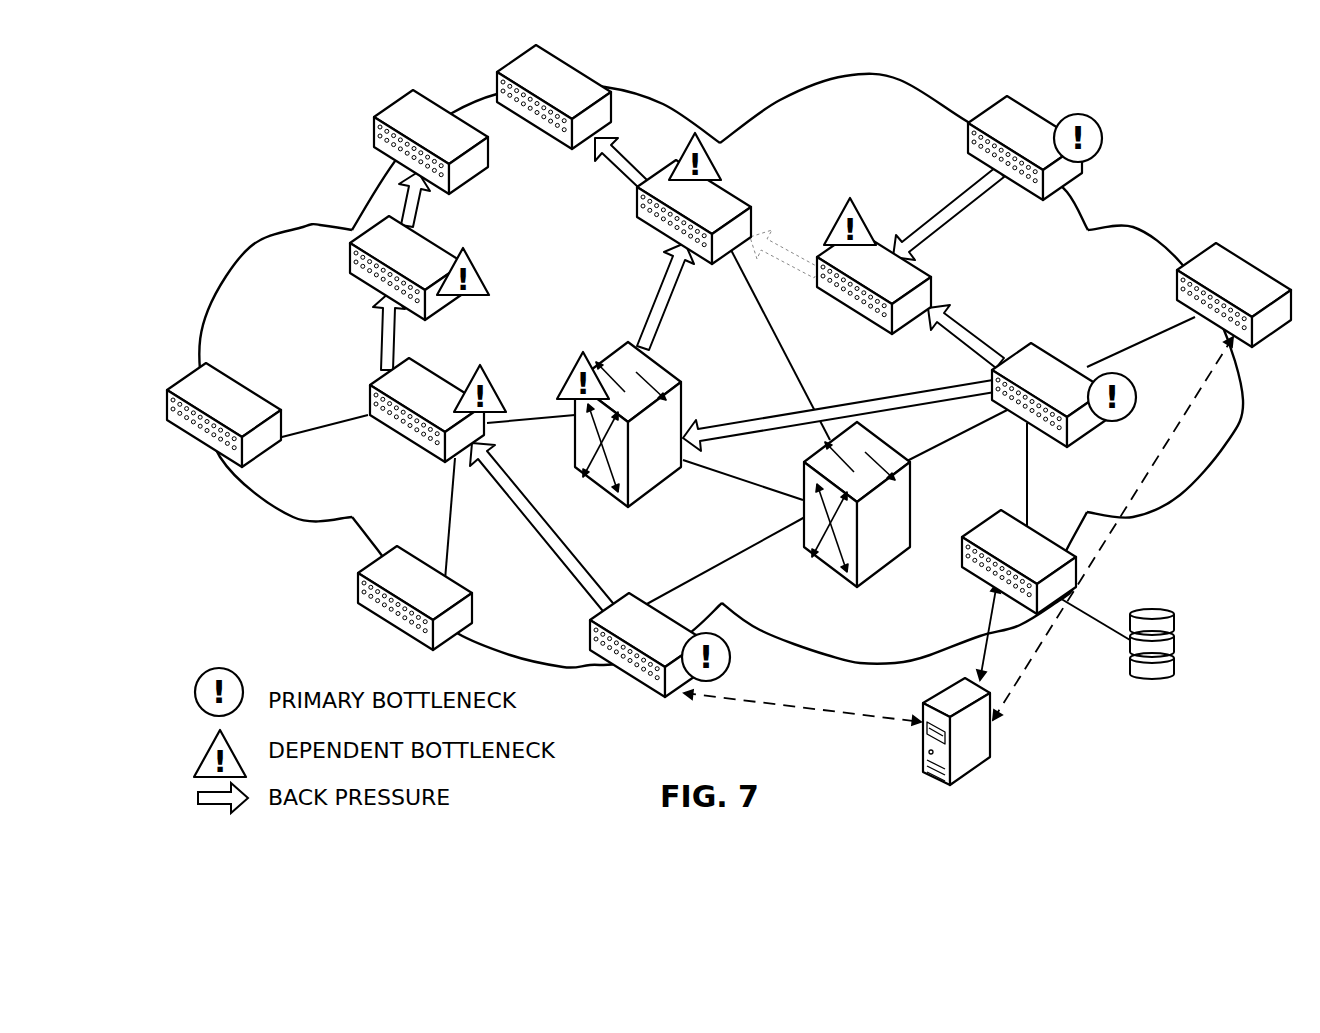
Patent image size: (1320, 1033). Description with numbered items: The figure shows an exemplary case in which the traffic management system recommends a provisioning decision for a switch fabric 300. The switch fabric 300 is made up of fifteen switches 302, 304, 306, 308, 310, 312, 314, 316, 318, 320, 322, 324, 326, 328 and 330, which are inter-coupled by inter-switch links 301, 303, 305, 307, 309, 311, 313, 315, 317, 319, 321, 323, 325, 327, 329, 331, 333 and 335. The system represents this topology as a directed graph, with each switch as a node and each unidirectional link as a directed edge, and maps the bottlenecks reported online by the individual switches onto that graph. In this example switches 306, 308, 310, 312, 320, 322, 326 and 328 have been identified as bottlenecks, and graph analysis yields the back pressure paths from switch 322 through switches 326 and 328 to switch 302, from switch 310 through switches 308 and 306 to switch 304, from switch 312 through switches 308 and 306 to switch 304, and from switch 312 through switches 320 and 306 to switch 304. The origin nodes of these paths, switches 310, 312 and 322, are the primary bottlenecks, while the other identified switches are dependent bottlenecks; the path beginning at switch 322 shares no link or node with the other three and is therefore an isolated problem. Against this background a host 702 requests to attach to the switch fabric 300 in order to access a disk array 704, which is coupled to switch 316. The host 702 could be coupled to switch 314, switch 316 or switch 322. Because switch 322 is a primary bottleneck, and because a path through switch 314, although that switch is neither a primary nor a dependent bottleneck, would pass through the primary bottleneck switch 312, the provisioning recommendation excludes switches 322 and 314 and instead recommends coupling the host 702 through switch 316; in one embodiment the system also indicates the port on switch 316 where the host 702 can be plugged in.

The switch fabric 300 is at (293, 233).
The inter-switch link 301 is at (417, 215).
The switch 302 is at (431, 142).
The inter-switch link 303 is at (622, 168).
The switch 304 is at (554, 97).
The inter-switch link 305 is at (652, 317).
The switch 306 is at (694, 198).
The inter-switch link 307 is at (777, 252).
The switch 308 is at (874, 266).
The inter-switch link 309 is at (940, 217).
The switch 310 is at (1035, 148).
The inter-switch link 311 is at (967, 330).
The switch 312 is at (1064, 395).
The inter-switch link 313 is at (1122, 345).
The switch 314 is at (1234, 295).
The inter-switch link 315 is at (1030, 503).
The switch 316 is at (1019, 562).
The inter-switch link 317 is at (945, 448).
The switch 318 is at (857, 504).
The inter-switch link 319 is at (840, 404).
The switch 320 is at (619, 424).
The inter-switch link 321 is at (790, 362).
The switch 322 is at (660, 645).
The inter-switch link 323 is at (732, 470).
The switch 324 is at (415, 598).
The inter-switch link 325 is at (693, 573).
The switch 326 is at (438, 410).
The inter-switch link 327 is at (506, 425).
The switch 328 is at (419, 268).
The inter-switch link 329 is at (527, 522).
The switch 330 is at (224, 415).
The inter-switch link 331 is at (445, 538).
The inter-switch link 333 is at (295, 428).
The inter-switch link 335 is at (383, 357).
The host 702 is at (957, 731).
The disk array 704 is at (1157, 613).